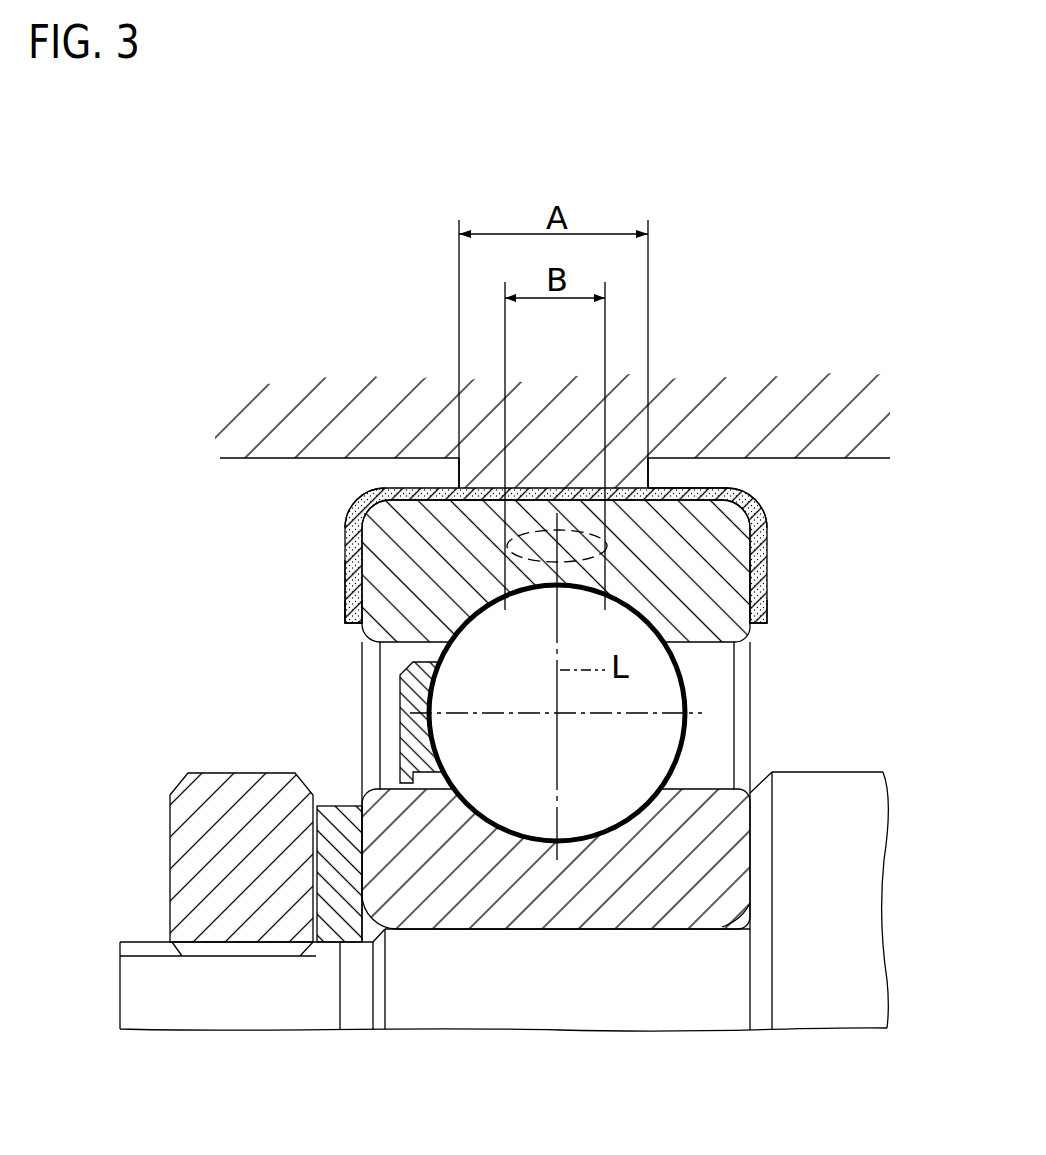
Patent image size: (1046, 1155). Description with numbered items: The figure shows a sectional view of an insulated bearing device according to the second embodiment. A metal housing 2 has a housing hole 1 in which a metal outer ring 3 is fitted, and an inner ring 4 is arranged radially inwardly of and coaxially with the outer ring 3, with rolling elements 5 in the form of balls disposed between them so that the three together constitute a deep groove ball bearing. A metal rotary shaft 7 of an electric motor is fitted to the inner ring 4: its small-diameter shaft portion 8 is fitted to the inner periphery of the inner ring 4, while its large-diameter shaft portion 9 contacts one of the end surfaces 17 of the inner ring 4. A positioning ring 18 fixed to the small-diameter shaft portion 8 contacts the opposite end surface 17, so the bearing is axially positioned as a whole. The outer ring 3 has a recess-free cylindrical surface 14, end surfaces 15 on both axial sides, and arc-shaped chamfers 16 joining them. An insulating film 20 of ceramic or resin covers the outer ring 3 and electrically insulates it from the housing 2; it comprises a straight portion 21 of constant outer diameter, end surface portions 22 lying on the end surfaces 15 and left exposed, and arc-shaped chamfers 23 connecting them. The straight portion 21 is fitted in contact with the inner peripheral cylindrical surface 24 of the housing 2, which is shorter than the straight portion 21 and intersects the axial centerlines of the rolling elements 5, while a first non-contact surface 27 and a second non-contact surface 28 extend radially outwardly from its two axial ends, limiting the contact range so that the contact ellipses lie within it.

The housing hole 1 is at (263, 460).
The housing 2 is at (248, 414).
The outer ring 3 is at (400, 620).
The inner ring 4 is at (545, 905).
The rolling elements 5 is at (598, 808).
The rotary shaft 7 is at (122, 972).
The small-diameter shaft portion 8 is at (455, 1010).
The large-diameter shaft portion 9 is at (808, 1010).
The cylindrical surface 14 is at (542, 525).
The end surfaces 15 is at (345, 572).
The chamfers 16 is at (364, 512).
The end surfaces 17 is at (357, 867).
The positioning ring 18 is at (188, 836).
The insulating film 20 is at (707, 490).
The straight portion 21 is at (577, 493).
The end surface portions 22 is at (345, 618).
The chamfers 23 is at (348, 512).
The inner peripheral cylindrical surface 24 is at (478, 498).
The first non-contact surface 27 is at (459, 478).
The second non-contact surface 28 is at (650, 478).